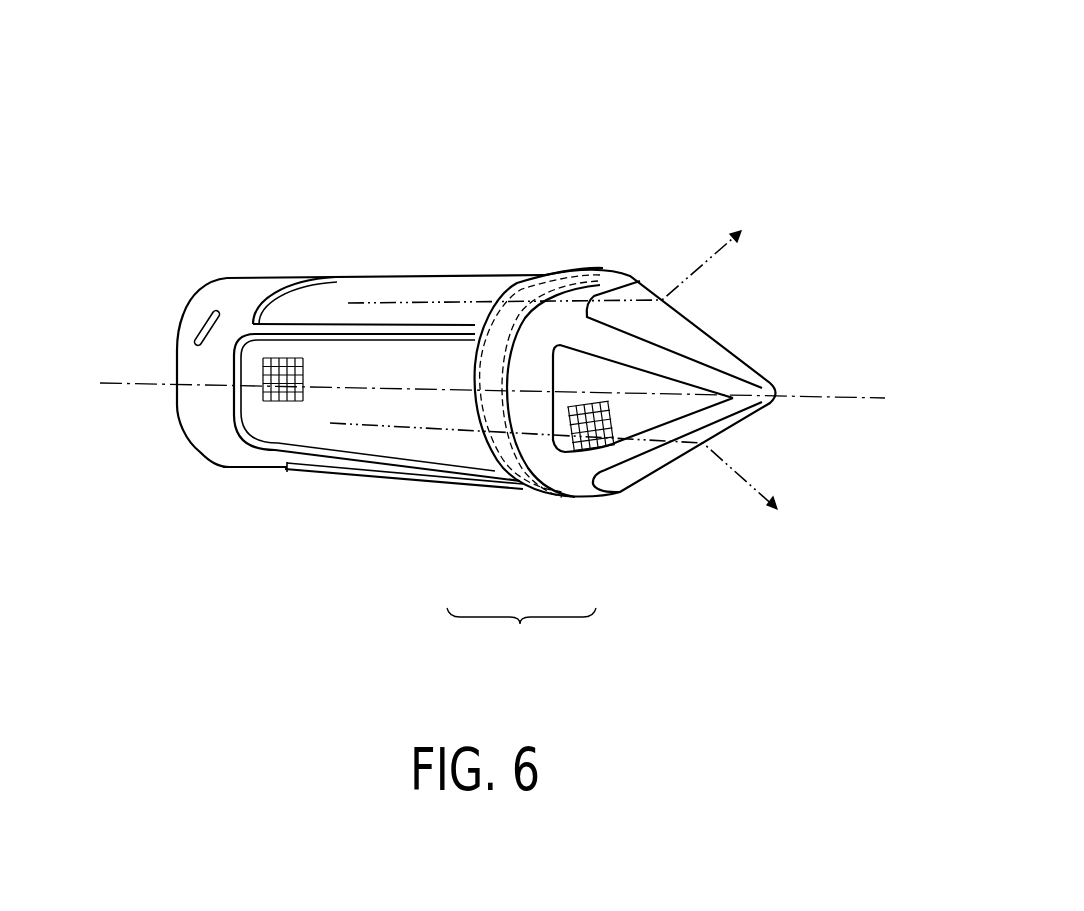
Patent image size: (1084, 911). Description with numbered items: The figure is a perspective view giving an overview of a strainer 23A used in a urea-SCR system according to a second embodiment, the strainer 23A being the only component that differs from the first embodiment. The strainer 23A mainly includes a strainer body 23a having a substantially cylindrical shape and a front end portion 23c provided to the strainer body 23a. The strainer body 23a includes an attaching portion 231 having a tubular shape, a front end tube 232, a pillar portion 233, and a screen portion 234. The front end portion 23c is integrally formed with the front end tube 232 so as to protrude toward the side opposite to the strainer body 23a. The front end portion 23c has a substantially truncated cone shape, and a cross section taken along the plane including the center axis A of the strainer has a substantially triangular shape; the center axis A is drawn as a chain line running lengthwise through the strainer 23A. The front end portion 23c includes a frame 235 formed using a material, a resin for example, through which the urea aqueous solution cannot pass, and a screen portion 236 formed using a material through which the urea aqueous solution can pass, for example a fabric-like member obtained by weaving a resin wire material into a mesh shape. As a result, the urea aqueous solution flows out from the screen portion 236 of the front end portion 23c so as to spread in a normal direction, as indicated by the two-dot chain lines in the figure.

The strainer 23A is at (662, 100).
The strainer body 23a is at (361, 173).
The front end portion 23c is at (521, 637).
The attaching portion 231 is at (247, 285).
The front end tube 232 is at (463, 487).
The pillar portion 233 is at (363, 322).
The screen portion 234 is at (450, 360).
The frame 235 is at (543, 468).
The screen portion 236 is at (677, 325).
The center axis A is at (838, 398).